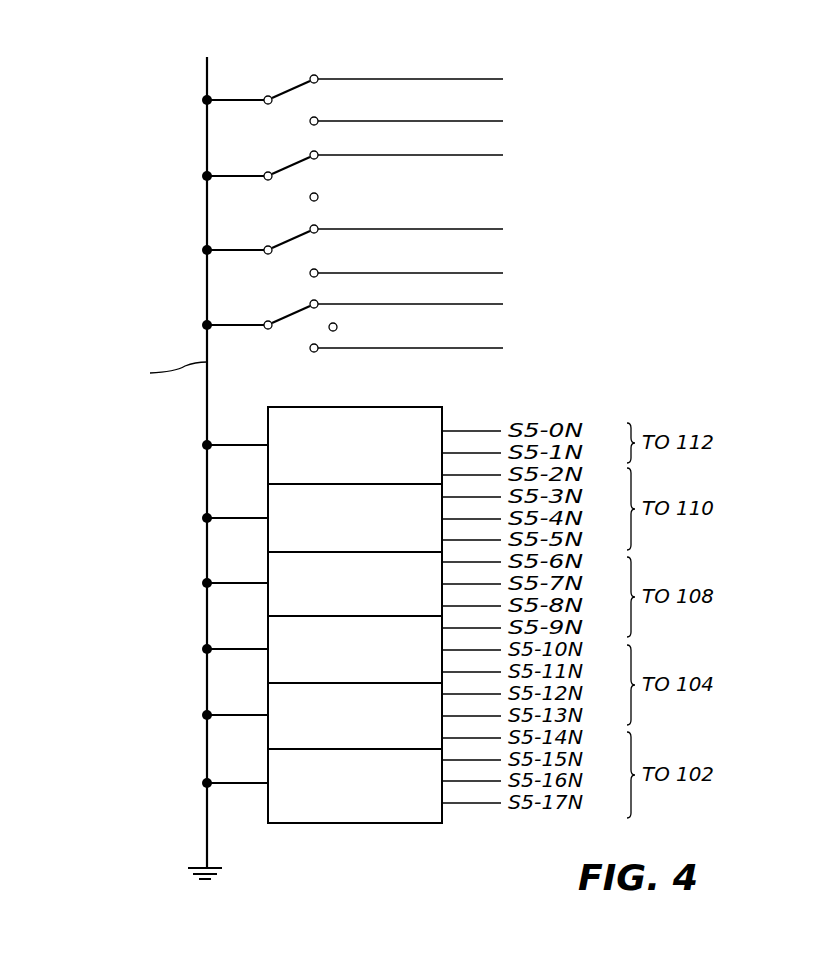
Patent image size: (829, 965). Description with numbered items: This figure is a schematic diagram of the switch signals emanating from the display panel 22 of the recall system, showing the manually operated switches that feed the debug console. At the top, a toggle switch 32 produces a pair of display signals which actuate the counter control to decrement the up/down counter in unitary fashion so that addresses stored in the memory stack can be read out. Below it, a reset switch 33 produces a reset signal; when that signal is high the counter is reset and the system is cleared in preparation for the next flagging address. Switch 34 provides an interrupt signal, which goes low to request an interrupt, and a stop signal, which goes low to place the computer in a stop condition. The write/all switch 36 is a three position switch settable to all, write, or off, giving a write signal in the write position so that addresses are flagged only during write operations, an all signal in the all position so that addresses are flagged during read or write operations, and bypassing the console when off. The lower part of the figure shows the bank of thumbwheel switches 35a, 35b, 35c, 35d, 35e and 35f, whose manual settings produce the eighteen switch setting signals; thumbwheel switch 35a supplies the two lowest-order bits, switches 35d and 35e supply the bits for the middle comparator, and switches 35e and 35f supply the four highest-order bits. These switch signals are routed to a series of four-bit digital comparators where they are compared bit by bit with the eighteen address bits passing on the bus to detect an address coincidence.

The display panel 22 is at (207, 456).
The toggle switch 32 is at (292, 82).
The reset switch 33 is at (290, 170).
The switch 34 is at (290, 244).
The write/all switch 36 is at (290, 318).
The thumbwheel switch 35a is at (355, 445).
The thumbwheel switch 35b is at (355, 518).
The thumbwheel switch 35c is at (355, 584).
The thumbwheel switch 35d is at (355, 649).
The thumbwheel switch 35e is at (355, 716).
The thumbwheel switch 35f is at (355, 786).